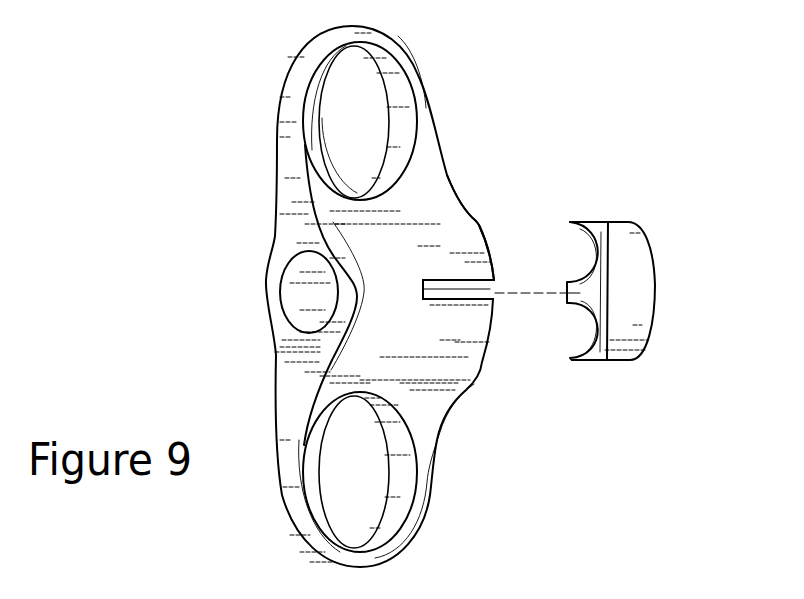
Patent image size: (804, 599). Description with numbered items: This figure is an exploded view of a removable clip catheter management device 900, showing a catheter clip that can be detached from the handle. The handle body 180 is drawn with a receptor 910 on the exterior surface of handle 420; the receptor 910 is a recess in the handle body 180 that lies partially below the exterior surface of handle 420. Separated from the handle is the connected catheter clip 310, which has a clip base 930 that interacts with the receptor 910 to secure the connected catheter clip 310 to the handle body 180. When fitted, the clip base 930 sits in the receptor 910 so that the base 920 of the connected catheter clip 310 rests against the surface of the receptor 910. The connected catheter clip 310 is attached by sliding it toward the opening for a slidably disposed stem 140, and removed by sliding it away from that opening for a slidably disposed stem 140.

The removable clip catheter management device 900 is at (557, 123).
The handle body 180 is at (440, 160).
The opening for a slidably disposed stem 140 is at (297, 291).
The exterior surface of handle 420 is at (492, 260).
The receptor 910 is at (491, 298).
The connected catheter clip 310 is at (640, 250).
The base 920 is at (567, 290).
The clip base 930 is at (567, 303).